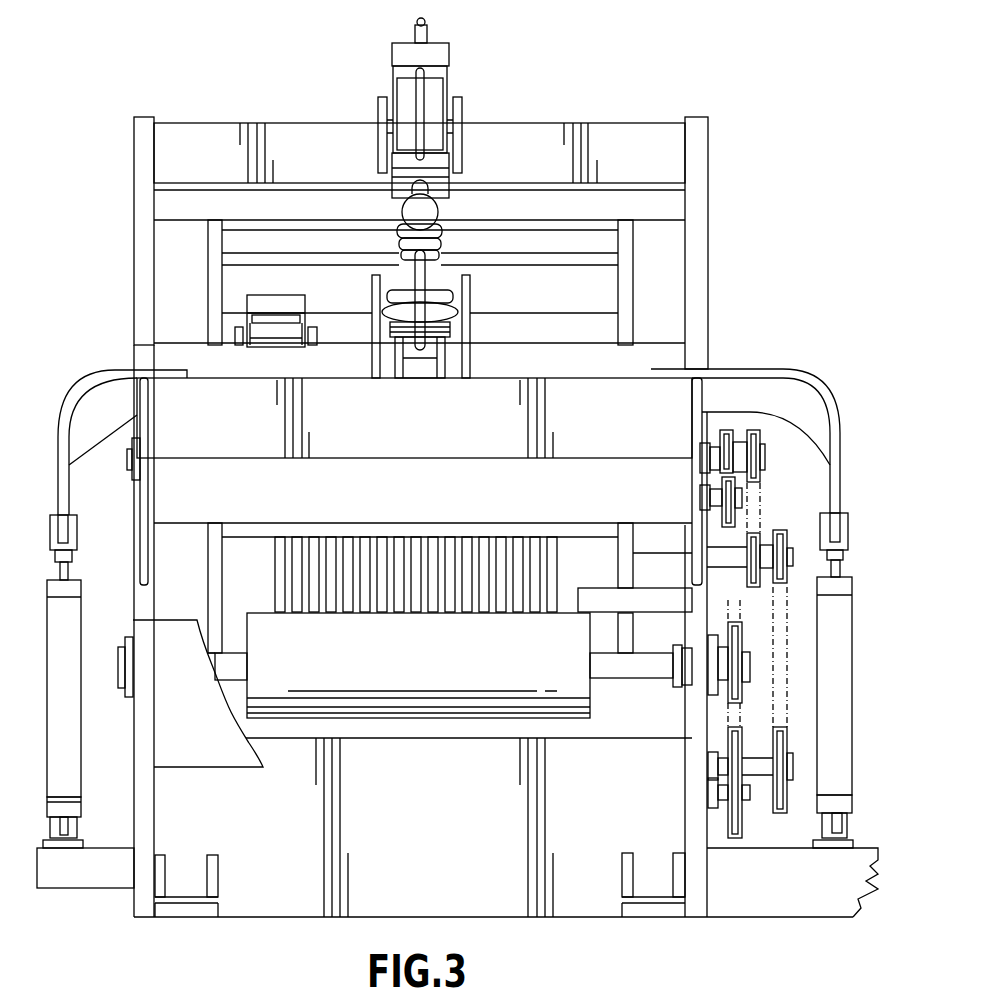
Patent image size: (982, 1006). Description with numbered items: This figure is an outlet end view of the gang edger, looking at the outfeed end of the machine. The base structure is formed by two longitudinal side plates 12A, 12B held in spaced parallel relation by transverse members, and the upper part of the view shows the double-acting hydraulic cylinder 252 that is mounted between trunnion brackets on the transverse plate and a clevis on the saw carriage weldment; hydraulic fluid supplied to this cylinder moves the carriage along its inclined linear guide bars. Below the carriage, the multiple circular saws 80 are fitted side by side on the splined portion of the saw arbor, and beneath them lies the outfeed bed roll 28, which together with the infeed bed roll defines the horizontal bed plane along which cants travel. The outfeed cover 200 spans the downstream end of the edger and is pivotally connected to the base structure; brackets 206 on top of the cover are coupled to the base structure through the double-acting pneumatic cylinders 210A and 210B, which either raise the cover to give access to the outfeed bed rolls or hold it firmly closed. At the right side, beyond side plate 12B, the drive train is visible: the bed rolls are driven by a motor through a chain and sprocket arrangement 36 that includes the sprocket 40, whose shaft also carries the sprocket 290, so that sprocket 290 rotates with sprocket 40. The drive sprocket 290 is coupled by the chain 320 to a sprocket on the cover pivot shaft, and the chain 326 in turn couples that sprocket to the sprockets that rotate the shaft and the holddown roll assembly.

The longitudinal side plate 12A is at (133, 142).
The longitudinal side plate 12B is at (708, 138).
The double-acting hydraulic cylinder 252 is at (440, 160).
The outfeed cover 200 is at (678, 393).
The brackets 206 is at (70, 495).
The circular saws 80 is at (365, 550).
The outfeed bed roll 28 is at (425, 720).
The chain 326 is at (772, 521).
The chain 320 is at (787, 648).
The chain and sprocket arrangement 36 is at (800, 702).
The sprocket 290 is at (783, 743).
The sprocket 40 is at (728, 738).
The double-acting pneumatic cylinder 210A is at (82, 778).
The double-acting pneumatic cylinder 210B is at (815, 788).